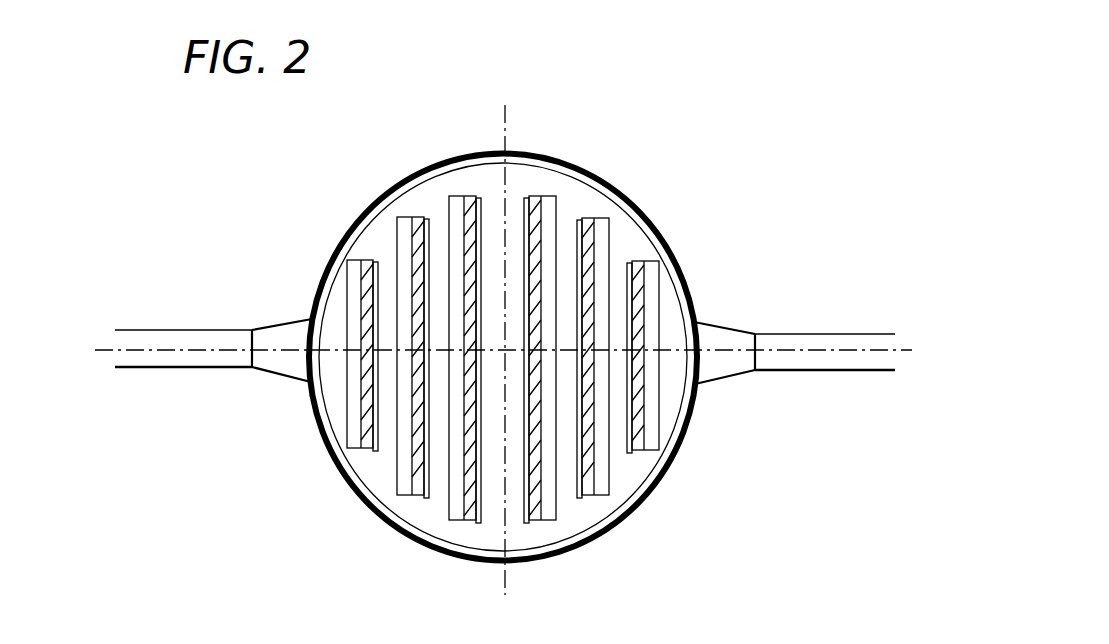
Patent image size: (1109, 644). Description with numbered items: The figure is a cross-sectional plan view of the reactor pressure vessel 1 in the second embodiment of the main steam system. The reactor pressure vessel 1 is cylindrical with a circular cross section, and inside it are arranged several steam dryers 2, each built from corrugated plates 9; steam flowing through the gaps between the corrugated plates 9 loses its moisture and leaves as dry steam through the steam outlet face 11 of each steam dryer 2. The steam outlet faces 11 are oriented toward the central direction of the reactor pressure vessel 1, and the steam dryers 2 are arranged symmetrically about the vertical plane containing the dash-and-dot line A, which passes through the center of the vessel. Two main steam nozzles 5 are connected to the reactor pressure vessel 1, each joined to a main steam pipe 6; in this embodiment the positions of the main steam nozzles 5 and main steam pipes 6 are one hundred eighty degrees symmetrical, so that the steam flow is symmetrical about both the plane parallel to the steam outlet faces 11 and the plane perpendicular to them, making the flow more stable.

The reactor pressure vessel 1 is at (523, 150).
The steam dryer 2 is at (345, 415).
The main steam nozzle 5 is at (290, 332).
The main steam pipe 6 is at (227, 360).
The corrugated plate 9 is at (357, 262).
The steam outlet face 11 is at (375, 367).
The dash-and-dot line A is at (503, 583).